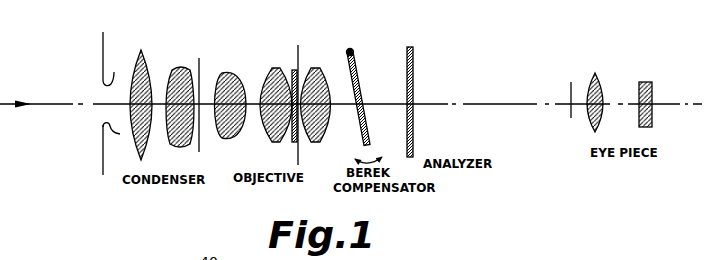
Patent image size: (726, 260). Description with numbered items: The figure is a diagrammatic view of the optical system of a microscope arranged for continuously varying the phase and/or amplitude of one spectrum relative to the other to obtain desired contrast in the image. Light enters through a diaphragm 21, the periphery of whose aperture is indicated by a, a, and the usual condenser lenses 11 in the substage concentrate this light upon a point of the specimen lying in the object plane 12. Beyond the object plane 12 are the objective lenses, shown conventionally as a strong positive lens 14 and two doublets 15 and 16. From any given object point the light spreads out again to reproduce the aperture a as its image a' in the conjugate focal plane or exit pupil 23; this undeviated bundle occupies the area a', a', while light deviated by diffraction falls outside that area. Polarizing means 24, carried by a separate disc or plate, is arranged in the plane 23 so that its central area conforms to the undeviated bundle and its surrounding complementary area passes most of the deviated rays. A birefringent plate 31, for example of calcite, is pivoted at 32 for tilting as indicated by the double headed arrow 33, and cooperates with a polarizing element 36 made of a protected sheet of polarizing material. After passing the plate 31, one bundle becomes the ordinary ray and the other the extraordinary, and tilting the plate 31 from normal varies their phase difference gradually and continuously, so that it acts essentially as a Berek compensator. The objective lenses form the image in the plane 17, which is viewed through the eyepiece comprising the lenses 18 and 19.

The diaphragm 21 is at (103, 42).
The aperture of the diaphragm a is at (113, 100).
The condenser lenses 11 is at (177, 70).
The object plane 12 is at (200, 59).
The strong positive lens 14 is at (230, 73).
The doublet 15 is at (273, 69).
The polarizing means 24 is at (293, 142).
The exit pupil 23 is at (298, 150).
The image of the aperture a' is at (309, 98).
The doublet 16 is at (318, 69).
The birefringent plate 31 is at (360, 92).
The pivot 32 is at (352, 50).
The double headed arrow 33 is at (362, 158).
The polarizing element 36 is at (413, 50).
The image plane 17 is at (570, 82).
The eyepiece lens 18 is at (597, 75).
The eyepiece lens 19 is at (640, 82).